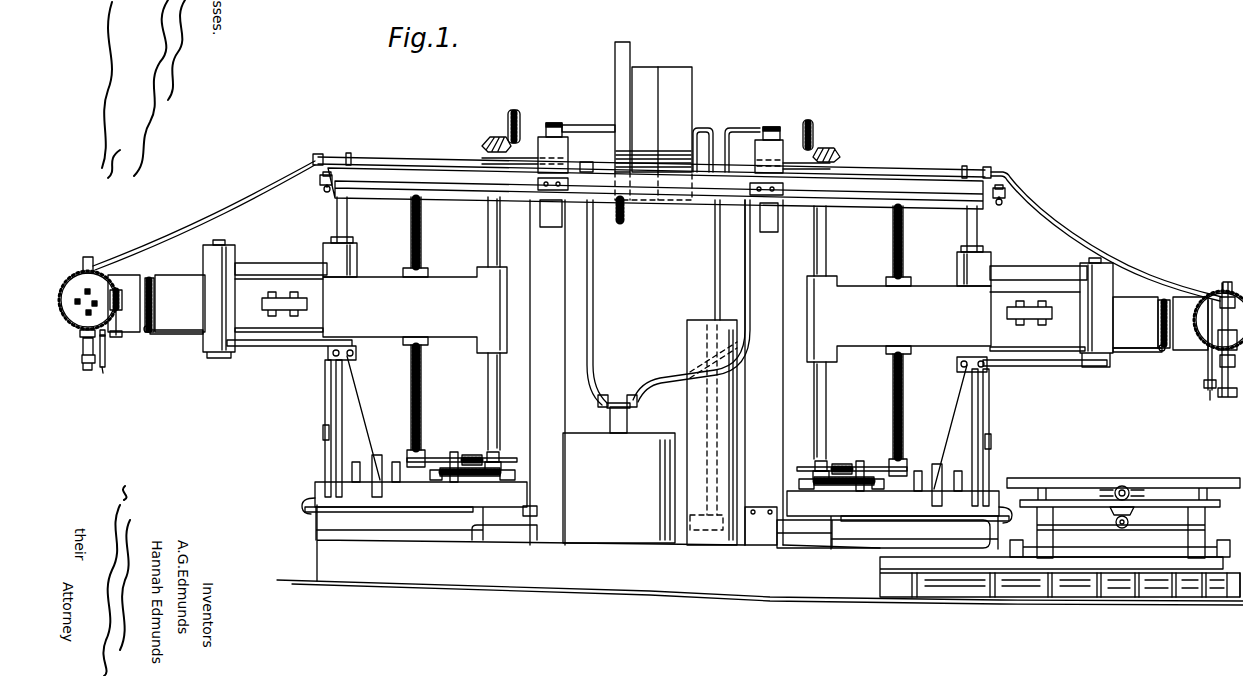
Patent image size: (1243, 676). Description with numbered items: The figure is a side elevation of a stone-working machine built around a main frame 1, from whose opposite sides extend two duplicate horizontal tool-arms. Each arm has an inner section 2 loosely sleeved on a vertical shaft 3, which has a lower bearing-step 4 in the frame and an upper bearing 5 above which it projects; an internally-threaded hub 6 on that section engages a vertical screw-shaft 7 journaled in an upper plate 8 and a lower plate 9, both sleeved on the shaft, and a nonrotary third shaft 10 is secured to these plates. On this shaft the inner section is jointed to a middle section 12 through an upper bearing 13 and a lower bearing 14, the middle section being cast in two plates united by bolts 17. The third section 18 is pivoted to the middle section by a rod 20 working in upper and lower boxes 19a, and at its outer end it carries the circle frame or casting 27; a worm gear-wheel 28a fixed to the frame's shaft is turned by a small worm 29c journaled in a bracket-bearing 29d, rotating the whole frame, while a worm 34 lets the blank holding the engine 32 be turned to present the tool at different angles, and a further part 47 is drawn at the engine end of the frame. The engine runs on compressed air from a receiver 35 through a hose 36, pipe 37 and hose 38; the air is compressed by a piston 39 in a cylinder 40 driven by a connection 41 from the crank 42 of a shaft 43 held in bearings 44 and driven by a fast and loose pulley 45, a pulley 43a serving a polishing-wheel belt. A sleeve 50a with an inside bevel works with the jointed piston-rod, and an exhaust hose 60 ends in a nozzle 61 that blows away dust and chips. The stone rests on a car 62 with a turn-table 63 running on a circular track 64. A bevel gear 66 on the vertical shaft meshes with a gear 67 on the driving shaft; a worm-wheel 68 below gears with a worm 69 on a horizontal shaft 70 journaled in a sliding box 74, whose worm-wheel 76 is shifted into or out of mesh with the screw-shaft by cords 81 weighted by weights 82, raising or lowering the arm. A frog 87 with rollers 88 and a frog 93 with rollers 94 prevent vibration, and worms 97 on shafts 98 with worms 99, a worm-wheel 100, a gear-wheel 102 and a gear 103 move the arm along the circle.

The main frame 1 is at (760, 391).
The inner section 2 is at (657, 314).
The vertical shaft 3 is at (501, 224).
The lower bearing-step 4 is at (495, 528).
The upper bearing 5 is at (520, 156).
The internally-threaded hub or sleeve 6 is at (428, 272).
The vertical screw-shaft 7 is at (411, 228).
The upper horizontal arm or plate 8 is at (464, 200).
The lower horizontal arm or plate 9 is at (657, 515).
The third shaft 10 is at (347, 222).
The middle section 12 is at (303, 280).
The upper bearing 13 is at (357, 262).
The lower bearing 14 is at (350, 352).
The bolts or screws 17 is at (278, 313).
The third section 18 is at (656, 311).
The upper and lower boxes 19a is at (237, 258).
The rod or shaft 20 is at (226, 240).
The circle frame or casting 27 is at (658, 312).
The worm gear-wheel 28a is at (153, 280).
The small worm 29c is at (148, 333).
The bracket-bearing 29d is at (185, 335).
The engine 32 is at (1221, 290).
The worm 34 is at (66, 335).
The receiver 35 is at (619, 473).
The hose or pipe 36 is at (595, 270).
The pipe 37 is at (436, 158).
The hose 38 is at (288, 181).
The piston 39 is at (706, 527).
The cylinder 40 is at (712, 432).
The connection 41 is at (721, 243).
The crank 42 is at (727, 152).
The shaft 43 is at (592, 125).
The pulley 43a is at (633, 49).
The bearings 44 is at (556, 122).
The fast and loose pulley 45 is at (665, 80).
The valve 47 is at (1216, 333).
The sleeve 50a is at (81, 356).
The hose 60 is at (106, 348).
The nozzle 61 is at (104, 365).
The car 62 is at (1123, 508).
The turn-table 63 is at (1157, 480).
The circular track 64 is at (1005, 557).
The bevel gear-wheel 66 is at (490, 137).
The gear 67 is at (520, 114).
The worm-wheel 68 is at (500, 462).
The worm 69 is at (498, 450).
The horizontal shaft 70 is at (430, 458).
The sliding box 74 is at (356, 462).
The worm-wheel 76 is at (422, 450).
The cords or cables 81 is at (362, 400).
The weight 82 is at (322, 432).
The frog 87 is at (301, 500).
The rollers 88 is at (315, 513).
The frog 93 is at (322, 180).
The rollers 94 is at (323, 192).
The worms 97 is at (378, 455).
The shaft 98 is at (430, 480).
The worm 99 is at (453, 450).
The worm-wheel 100 is at (470, 455).
The gear-wheel 102 is at (465, 478).
The gear 103 is at (490, 478).